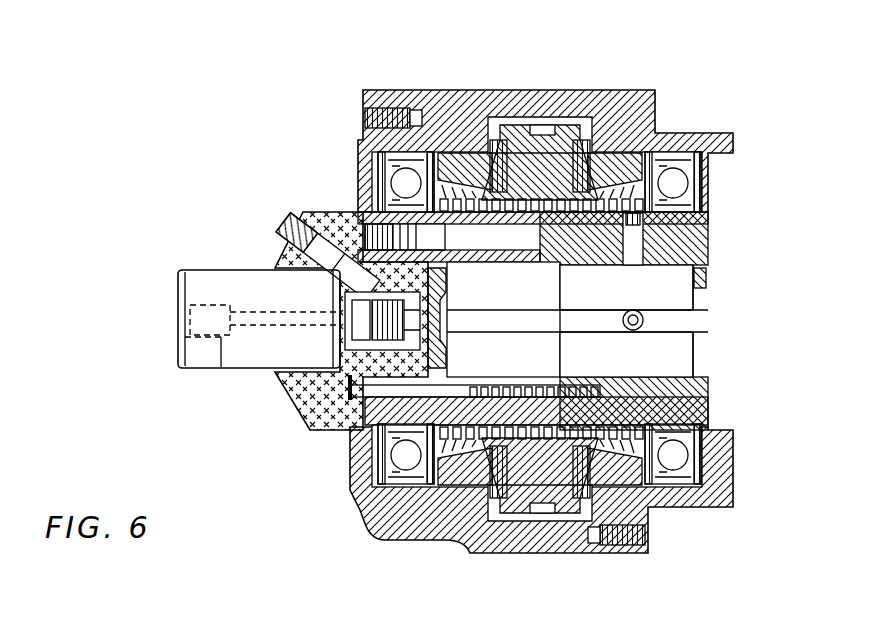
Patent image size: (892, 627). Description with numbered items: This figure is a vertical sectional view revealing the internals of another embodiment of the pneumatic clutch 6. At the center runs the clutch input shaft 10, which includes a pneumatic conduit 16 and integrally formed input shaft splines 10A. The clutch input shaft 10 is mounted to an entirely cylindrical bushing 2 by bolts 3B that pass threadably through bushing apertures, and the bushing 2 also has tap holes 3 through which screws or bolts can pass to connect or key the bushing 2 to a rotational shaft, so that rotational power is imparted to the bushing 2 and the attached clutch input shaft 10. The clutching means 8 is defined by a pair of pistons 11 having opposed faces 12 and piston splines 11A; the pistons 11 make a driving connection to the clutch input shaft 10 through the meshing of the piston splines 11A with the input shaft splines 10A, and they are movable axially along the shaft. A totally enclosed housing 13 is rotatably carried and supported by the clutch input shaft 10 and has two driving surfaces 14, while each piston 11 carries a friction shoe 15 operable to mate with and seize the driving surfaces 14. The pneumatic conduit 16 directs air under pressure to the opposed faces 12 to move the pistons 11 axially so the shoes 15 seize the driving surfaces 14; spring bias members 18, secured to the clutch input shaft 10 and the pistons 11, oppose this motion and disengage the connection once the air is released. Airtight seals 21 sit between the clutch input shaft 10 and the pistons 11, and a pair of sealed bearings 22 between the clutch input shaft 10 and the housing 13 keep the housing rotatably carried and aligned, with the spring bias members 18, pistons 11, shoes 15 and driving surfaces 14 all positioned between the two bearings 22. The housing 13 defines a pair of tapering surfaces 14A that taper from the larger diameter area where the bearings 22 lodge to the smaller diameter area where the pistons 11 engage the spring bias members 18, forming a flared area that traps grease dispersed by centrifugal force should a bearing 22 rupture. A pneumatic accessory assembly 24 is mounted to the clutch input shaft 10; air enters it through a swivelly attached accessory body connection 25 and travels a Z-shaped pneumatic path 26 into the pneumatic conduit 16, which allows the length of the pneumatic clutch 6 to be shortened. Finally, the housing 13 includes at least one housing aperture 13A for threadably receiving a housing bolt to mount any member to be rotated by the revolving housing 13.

The bushing 2 is at (710, 280).
The tap holes 3 is at (640, 270).
The bolts 3B is at (348, 402).
The pneumatic clutch 6 is at (720, 208).
The clutching means 8 is at (558, 117).
The clutch input shaft 10 is at (555, 265).
The input shaft splines 10A is at (500, 265).
The pistons 11 is at (505, 265).
The piston splines 11A is at (540, 372).
The opposed faces 12 is at (520, 145).
The totally enclosed housing 13 is at (503, 90).
The housing aperture 13A is at (365, 115).
The driving surfaces 14 is at (480, 140).
The tapering surfaces 14A is at (460, 185).
The friction shoe 15 is at (495, 160).
The pneumatic conduit 16 is at (340, 237).
The spring bias members 18 is at (470, 150).
The airtight seals 21 is at (388, 215).
The sealed bearings 22 is at (406, 183).
The pneumatic accessory assembly 24 is at (215, 268).
The accessory body connection 25 is at (233, 358).
The Z-shaped pneumatic path 26 is at (300, 228).